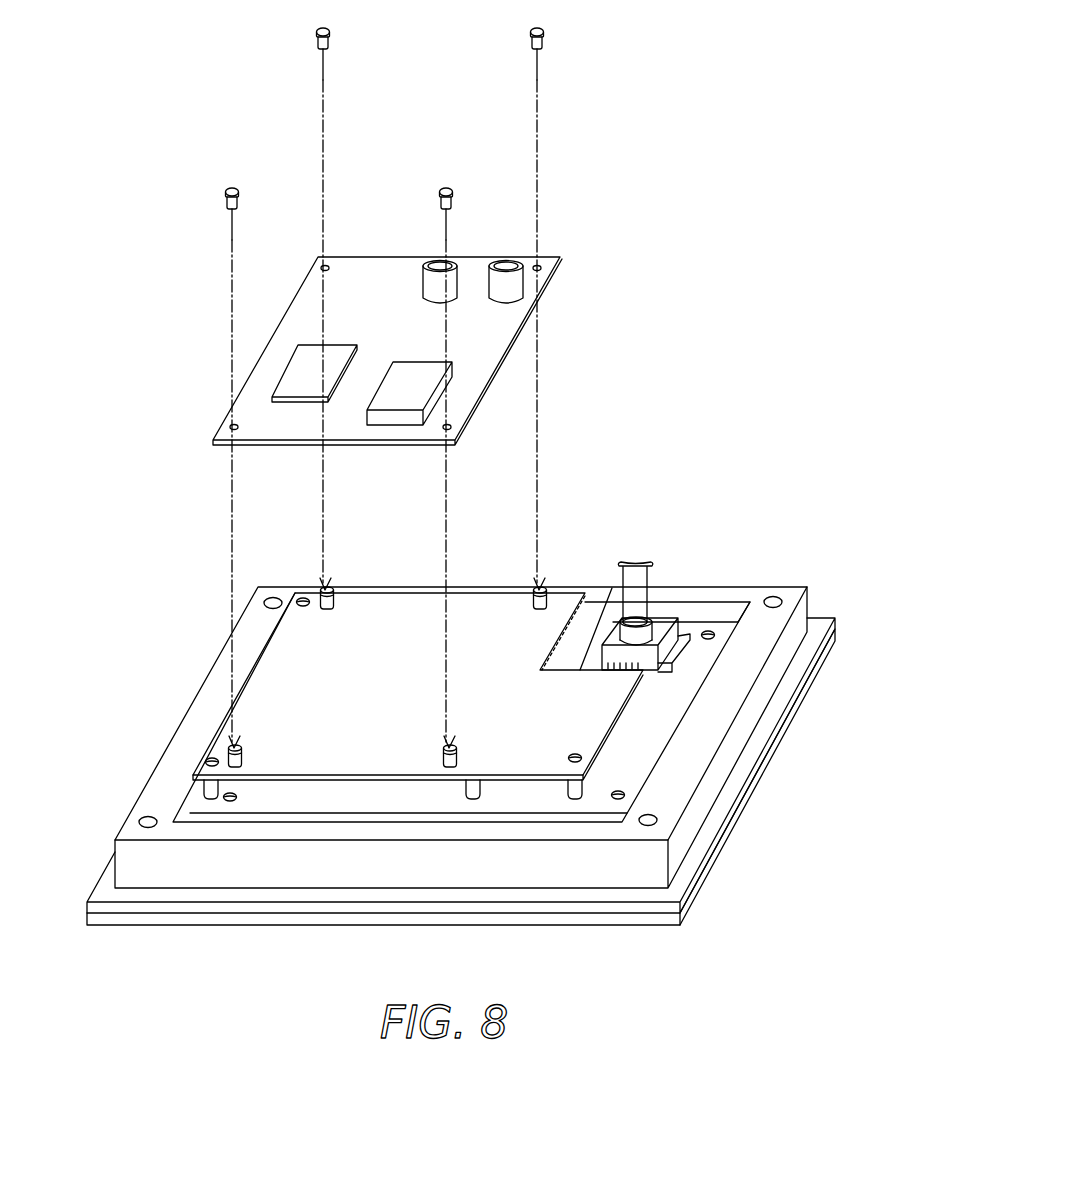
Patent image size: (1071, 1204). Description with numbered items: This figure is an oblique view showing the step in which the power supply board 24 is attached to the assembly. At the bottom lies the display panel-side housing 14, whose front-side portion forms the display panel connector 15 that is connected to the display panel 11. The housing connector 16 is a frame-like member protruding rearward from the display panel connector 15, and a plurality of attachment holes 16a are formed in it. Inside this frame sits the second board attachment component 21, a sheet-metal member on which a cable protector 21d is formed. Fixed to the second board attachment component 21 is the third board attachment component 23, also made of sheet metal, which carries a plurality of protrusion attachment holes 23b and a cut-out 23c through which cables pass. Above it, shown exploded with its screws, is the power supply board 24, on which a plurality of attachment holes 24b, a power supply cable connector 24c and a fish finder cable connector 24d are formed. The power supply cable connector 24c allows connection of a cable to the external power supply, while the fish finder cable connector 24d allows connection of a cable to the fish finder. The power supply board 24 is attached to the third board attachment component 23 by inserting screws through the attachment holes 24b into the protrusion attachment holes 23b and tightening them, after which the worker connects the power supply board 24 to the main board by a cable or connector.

The display panel 11 is at (718, 845).
The display panel-side housing 14 is at (847, 598).
The display panel connector 15 is at (820, 618).
The housing connector 16 is at (718, 593).
The attachment hole 16a is at (768, 596).
The second board attachment component 21 is at (675, 707).
The cable protector 21d is at (667, 610).
The third board attachment component 23 is at (393, 595).
The protrusion attachment hole 23b is at (329, 610).
The cut-out 23c is at (600, 645).
The power supply board 24 is at (385, 252).
The attachment hole 24b is at (234, 425).
The power supply cable connector 24c is at (452, 282).
The fish finder cable connector 24d is at (517, 283).